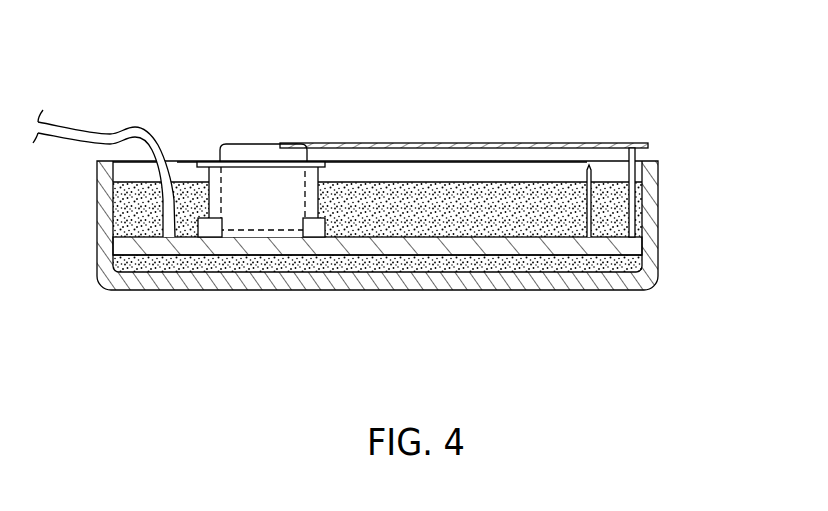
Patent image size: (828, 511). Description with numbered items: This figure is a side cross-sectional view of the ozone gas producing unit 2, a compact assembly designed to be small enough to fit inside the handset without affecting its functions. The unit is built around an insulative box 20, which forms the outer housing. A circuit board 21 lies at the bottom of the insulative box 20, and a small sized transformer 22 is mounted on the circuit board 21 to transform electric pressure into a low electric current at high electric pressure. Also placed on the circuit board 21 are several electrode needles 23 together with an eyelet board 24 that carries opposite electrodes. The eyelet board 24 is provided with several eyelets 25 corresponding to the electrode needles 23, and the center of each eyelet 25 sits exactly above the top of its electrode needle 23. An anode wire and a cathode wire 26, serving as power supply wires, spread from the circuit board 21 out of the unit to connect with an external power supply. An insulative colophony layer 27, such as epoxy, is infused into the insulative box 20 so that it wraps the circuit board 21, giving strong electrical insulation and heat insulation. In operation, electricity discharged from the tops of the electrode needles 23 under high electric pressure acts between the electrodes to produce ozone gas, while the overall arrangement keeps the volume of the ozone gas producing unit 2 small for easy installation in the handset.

The ozone gas producing unit 2 is at (387, 203).
The insulative box 20 is at (658, 238).
The circuit board 21 is at (417, 240).
The small sized transformer 22 is at (252, 178).
The electrode needle 23 is at (592, 172).
The eyelet board 24 is at (450, 143).
The eyelet 25 is at (590, 143).
The anode wire / cathode wire 26 is at (90, 140).
The insulative colophony layer 27 is at (375, 200).